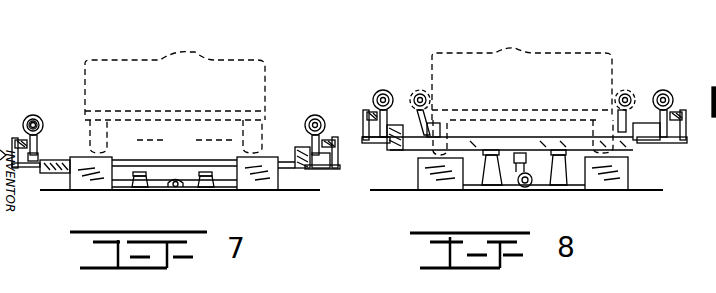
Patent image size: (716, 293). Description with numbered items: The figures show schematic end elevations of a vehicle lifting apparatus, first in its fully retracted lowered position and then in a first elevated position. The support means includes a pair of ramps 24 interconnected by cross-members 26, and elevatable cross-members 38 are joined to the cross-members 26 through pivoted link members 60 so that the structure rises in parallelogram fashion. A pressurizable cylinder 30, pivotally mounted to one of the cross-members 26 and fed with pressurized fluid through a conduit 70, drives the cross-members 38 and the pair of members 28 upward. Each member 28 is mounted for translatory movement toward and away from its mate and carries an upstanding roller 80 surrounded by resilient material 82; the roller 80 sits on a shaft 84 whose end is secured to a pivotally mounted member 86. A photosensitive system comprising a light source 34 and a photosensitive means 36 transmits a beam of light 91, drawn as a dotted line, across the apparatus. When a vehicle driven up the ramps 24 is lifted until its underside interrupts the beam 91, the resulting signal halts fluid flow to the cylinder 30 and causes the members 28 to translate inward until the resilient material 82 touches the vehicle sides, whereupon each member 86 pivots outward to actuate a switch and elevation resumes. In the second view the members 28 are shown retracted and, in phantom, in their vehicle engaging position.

In FIG. 7, the ramp 24 is at (83, 187).
In FIG. 8, the ramp 24 is at (430, 182).
In FIG. 7, the cross-member 26 is at (230, 190).
In FIG. 7, the member 28 is at (60, 155).
In FIG. 8, the member 28 is at (397, 152).
In FIG. 7, the pressurizable cylinder 30 is at (187, 190).
In FIG. 8, the pressurizable cylinder 30 is at (530, 187).
In FIG. 7, the light source 34 is at (330, 138).
In FIG. 8, the light source 34 is at (675, 110).
In FIG. 7, the photosensitive means 36 is at (13, 137).
In FIG. 8, the photosensitive means 36 is at (370, 110).
In FIG. 7, the cross-member 38 is at (298, 187).
In FIG. 8, the cross-member 38 is at (415, 152).
In FIG. 7, the link member 60 is at (137, 187).
In FIG. 8, the link member 60 is at (484, 185).
In FIG. 8, the conduit 70 is at (516, 183).
In FIG. 7, the roller 80 is at (42, 124).
In FIG. 7, the resilient material 82 is at (38, 115).
In FIG. 8, the resilient material 82 is at (423, 92).
In FIG. 7, the shaft 84 is at (38, 140).
In FIG. 7, the member 86 is at (18, 162).
In FIG. 7, the beam of light 91 is at (164, 135).